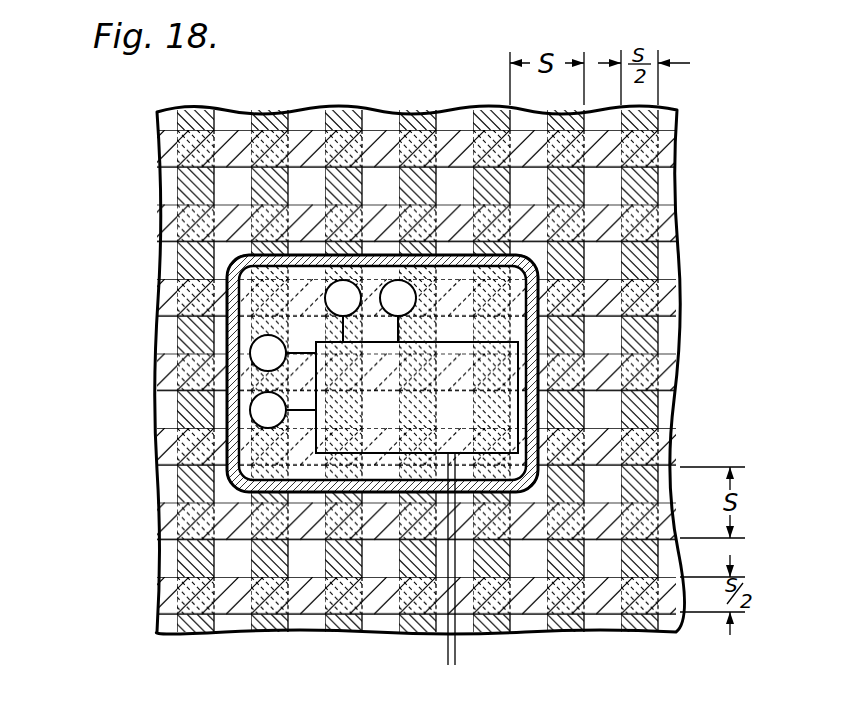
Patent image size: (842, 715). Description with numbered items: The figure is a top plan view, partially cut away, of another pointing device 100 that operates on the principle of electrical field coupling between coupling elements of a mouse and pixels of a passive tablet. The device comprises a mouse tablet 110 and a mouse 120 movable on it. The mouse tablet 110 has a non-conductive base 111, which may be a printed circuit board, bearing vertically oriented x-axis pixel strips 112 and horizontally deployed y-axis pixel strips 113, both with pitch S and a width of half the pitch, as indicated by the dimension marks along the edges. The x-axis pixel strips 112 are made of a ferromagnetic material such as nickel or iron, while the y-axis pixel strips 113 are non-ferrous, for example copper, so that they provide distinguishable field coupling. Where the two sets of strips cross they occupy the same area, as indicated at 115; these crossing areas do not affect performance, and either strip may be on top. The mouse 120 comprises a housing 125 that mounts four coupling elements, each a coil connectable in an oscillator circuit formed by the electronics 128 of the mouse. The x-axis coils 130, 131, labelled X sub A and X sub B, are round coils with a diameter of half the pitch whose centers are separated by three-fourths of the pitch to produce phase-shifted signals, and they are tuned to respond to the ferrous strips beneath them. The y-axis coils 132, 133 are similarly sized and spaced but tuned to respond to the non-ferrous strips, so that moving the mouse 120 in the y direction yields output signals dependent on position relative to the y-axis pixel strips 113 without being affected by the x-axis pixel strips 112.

The pointing device 100 is at (104, 142).
The mouse tablet 110 is at (146, 196).
The non-conductive base 111 is at (163, 258).
The x-axis pixel strips 112 is at (193, 330).
The y-axis pixel strips 113 is at (230, 140).
The crossing areas of strips 115 is at (276, 143).
The mouse 120 is at (542, 253).
The housing 125 is at (533, 333).
The electronics 128 is at (518, 410).
The x-axis coil 130 is at (354, 289).
The x-axis coil 131 is at (414, 292).
The y-axis coil 132 is at (253, 418).
The y-axis coil 133 is at (253, 361).